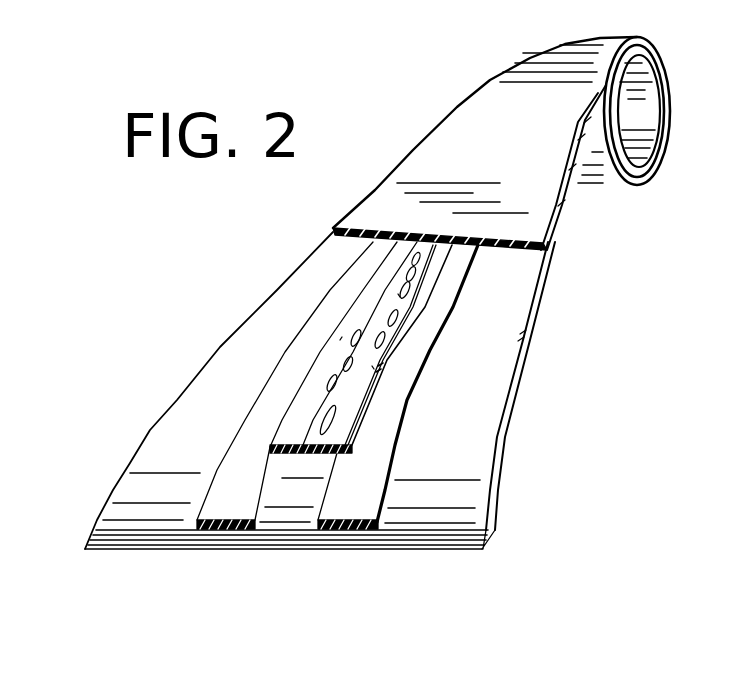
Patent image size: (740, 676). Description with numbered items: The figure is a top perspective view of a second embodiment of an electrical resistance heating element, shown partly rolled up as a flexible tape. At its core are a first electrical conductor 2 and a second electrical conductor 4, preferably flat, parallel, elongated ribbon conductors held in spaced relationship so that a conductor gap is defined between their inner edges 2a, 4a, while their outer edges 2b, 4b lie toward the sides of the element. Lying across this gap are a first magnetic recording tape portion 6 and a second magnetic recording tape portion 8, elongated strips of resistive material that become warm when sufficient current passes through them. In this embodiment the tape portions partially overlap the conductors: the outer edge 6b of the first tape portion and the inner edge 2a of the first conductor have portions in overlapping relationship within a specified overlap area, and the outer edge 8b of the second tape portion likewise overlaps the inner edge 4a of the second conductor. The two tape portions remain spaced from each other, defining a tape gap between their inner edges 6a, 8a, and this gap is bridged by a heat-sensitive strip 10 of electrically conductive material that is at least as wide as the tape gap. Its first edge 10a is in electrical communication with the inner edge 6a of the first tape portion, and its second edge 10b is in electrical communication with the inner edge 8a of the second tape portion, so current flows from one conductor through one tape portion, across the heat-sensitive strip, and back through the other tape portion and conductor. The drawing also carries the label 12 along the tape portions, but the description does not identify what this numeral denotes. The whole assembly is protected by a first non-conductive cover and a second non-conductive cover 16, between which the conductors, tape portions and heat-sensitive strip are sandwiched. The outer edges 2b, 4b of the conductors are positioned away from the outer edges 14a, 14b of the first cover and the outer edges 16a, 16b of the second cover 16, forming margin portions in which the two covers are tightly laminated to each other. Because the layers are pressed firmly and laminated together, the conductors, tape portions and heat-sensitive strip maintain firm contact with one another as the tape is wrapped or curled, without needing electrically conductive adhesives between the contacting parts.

The first electrical conductor 2 is at (226, 510).
The inner edge of first electrical conductor 2a is at (245, 510).
The outer edge of first electrical conductor 2b is at (205, 528).
The second electrical conductor 4 is at (345, 507).
The inner edge of second electrical conductor 4a is at (328, 510).
The outer edge of second electrical conductor 4b is at (380, 528).
The first magnetic recording tape portion 6 is at (328, 357).
The inner edge of first magnetic recording tape portion 6a is at (358, 323).
The outer edge of first magnetic recording tape portion 6b is at (277, 425).
The second magnetic recording tape portion 8 is at (378, 358).
The inner edge of second magnetic recording tape portion 8a is at (410, 298).
The outer edge of second magnetic recording tape portion 8b is at (365, 372).
The heat-sensitive strip 10 is at (320, 440).
The first edge of heat-sensitive strip 10a is at (330, 383).
The second edge of heat-sensitive strip 10b is at (345, 398).
The perforations in wound contact layer 12 is at (393, 283).
The outer edge of first non-conductive cover 14a is at (111, 486).
The outer edge of first non-conductive cover 14b is at (495, 523).
The second non-conductive cover 16 is at (421, 164).
The outer edge of second non-conductive cover 16a is at (453, 112).
The outer edge of second non-conductive cover 16b is at (562, 215).